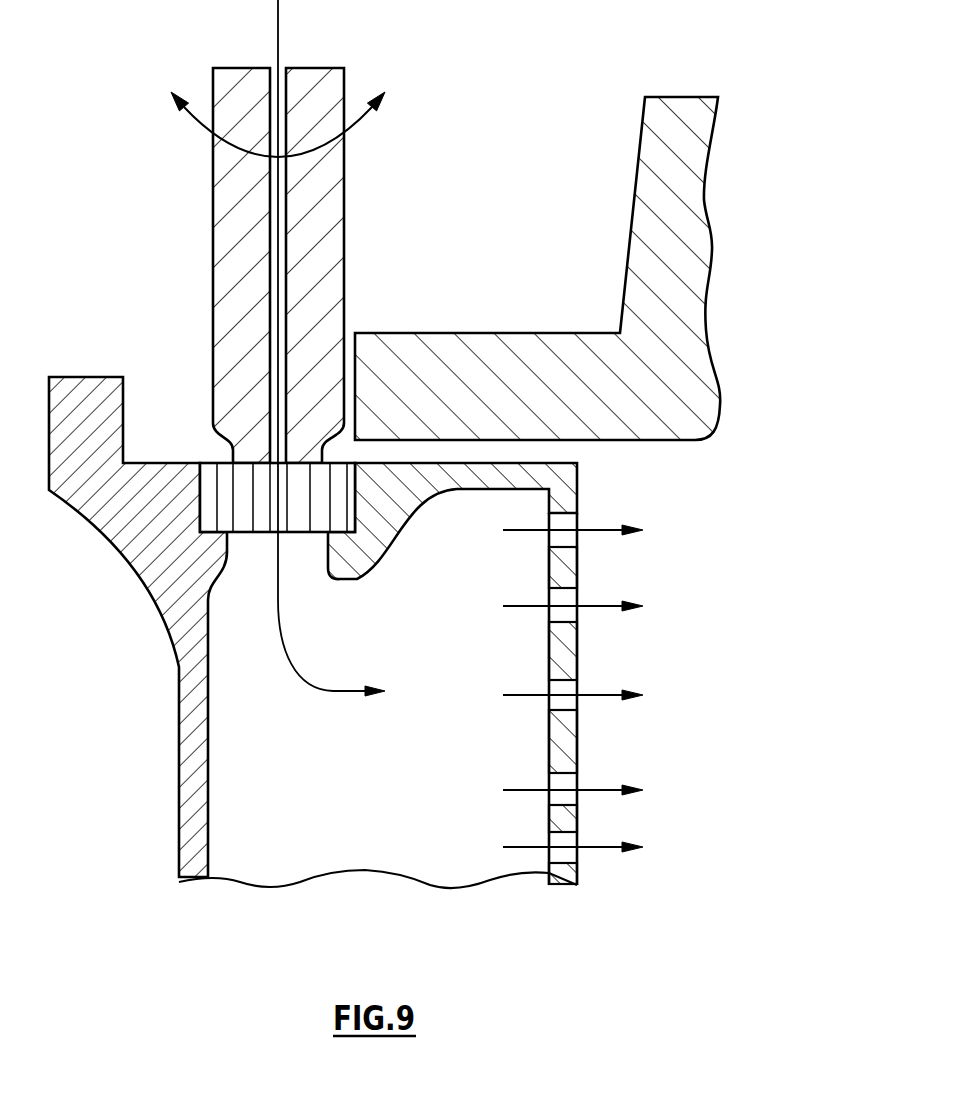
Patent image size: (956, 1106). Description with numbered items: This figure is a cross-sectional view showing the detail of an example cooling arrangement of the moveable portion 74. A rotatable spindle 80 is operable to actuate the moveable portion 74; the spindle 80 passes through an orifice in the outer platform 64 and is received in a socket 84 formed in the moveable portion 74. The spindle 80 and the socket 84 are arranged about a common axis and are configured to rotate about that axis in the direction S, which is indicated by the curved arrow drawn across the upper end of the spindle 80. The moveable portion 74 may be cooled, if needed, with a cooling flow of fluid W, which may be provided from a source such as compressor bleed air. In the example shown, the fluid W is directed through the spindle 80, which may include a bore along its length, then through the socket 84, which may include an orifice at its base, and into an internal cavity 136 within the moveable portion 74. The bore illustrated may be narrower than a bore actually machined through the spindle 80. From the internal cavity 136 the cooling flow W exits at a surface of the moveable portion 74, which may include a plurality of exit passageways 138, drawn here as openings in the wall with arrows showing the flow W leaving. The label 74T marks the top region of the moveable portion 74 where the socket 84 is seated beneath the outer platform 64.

The outer platform 64 is at (685, 228).
The moveable portion 74 is at (179, 790).
The top plate of housing 74T is at (577, 482).
The spindle 80 is at (344, 296).
The socket 84 is at (355, 515).
The internal cavity 136 is at (396, 839).
The exit passageways 138 is at (570, 596).
The cooling flow of fluid W is at (278, 32).
The direction of rotation S is at (363, 122).